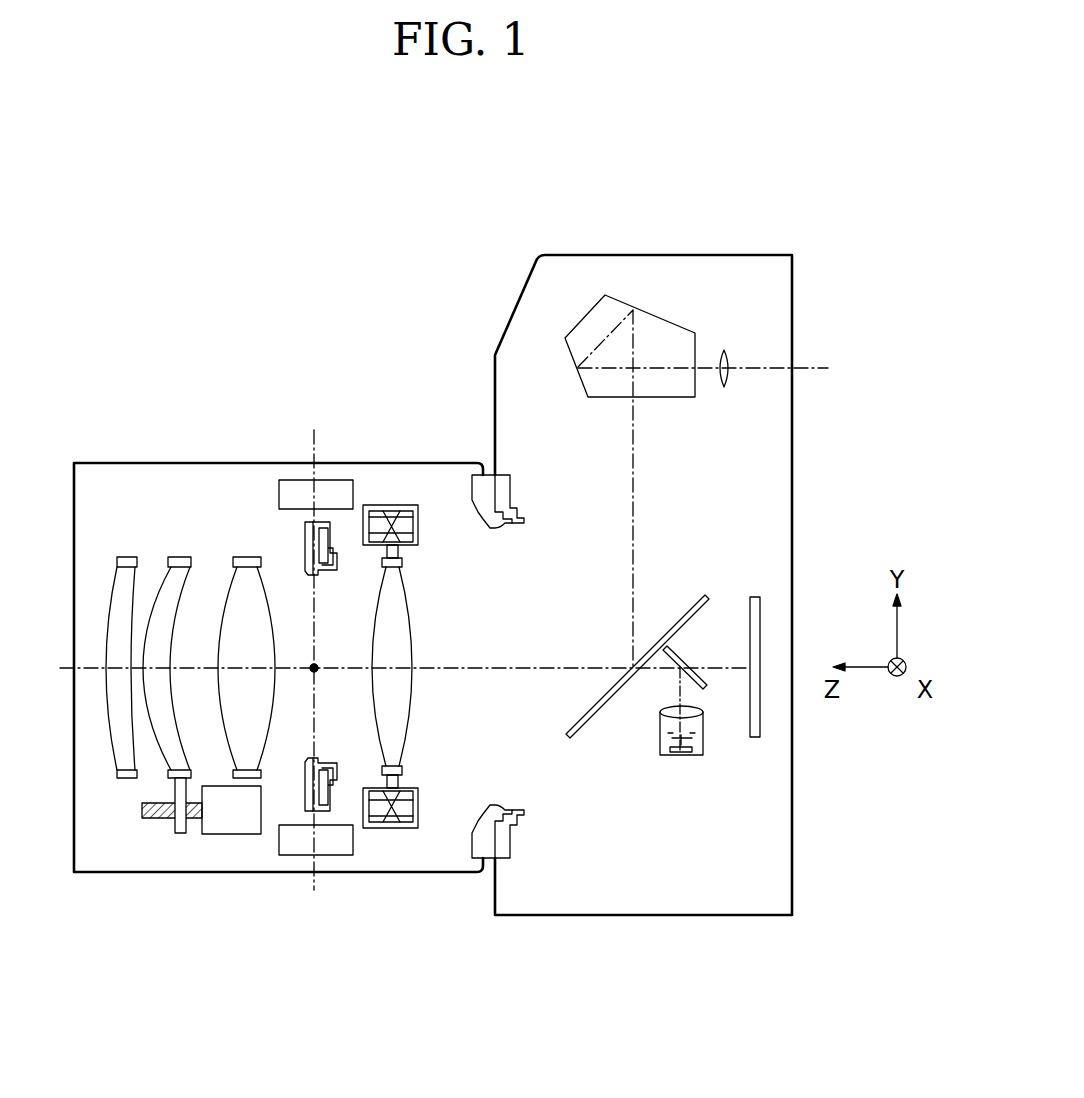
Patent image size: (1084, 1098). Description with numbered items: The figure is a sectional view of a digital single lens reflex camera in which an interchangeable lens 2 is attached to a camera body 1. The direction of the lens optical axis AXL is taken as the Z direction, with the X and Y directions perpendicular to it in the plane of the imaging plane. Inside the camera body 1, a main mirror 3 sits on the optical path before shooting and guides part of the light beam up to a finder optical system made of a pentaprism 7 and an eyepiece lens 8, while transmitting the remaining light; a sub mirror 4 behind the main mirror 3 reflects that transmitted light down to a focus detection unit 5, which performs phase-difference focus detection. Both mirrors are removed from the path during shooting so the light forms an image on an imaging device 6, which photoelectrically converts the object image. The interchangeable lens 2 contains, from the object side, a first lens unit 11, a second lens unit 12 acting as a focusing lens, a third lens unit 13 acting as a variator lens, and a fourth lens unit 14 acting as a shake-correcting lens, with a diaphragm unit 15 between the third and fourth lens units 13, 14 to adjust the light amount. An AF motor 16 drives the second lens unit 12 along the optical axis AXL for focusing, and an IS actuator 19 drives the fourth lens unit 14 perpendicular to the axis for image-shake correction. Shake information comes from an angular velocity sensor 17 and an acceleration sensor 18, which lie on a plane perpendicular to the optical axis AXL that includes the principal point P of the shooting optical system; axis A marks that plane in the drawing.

The camera body 1 is at (552, 317).
The interchangeable lens 2 is at (138, 485).
The main mirror 3 is at (603, 708).
The sub mirror 4 is at (698, 690).
The focus detection unit 5 is at (669, 753).
The imaging device 6 is at (755, 727).
The pentaprism 7 is at (630, 322).
The eyepiece lens 8 is at (724, 350).
The first lens unit 11 is at (127, 735).
The second lens unit 12 is at (168, 743).
The third lens unit 13 is at (253, 738).
The fourth lens unit 14 is at (403, 730).
The diaphragm unit 15 is at (308, 548).
The AF motor 16 is at (232, 817).
The angular velocity sensor 17 is at (330, 842).
The acceleration sensor 18 is at (293, 494).
The IS actuator 19 is at (380, 523).
The rotation axis A is at (318, 445).
The principal point P is at (318, 673).
The lens optical axis AXL is at (498, 667).